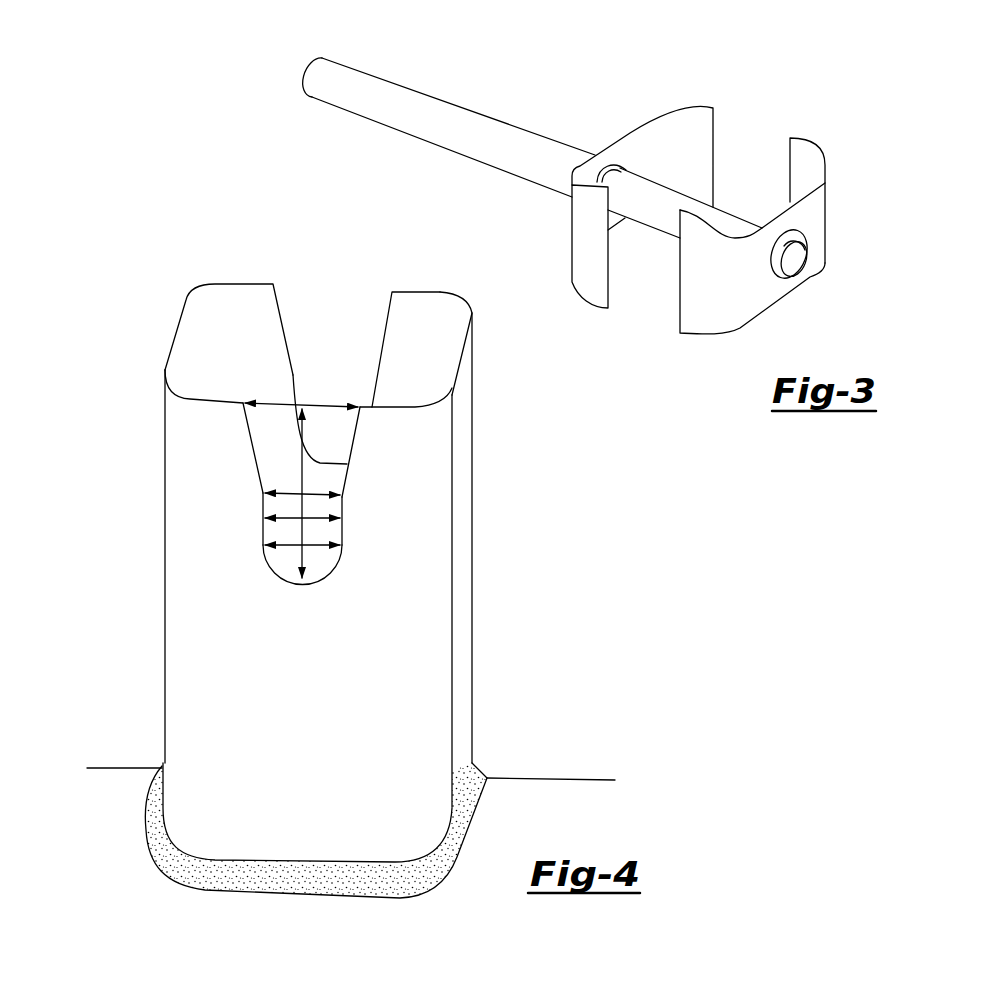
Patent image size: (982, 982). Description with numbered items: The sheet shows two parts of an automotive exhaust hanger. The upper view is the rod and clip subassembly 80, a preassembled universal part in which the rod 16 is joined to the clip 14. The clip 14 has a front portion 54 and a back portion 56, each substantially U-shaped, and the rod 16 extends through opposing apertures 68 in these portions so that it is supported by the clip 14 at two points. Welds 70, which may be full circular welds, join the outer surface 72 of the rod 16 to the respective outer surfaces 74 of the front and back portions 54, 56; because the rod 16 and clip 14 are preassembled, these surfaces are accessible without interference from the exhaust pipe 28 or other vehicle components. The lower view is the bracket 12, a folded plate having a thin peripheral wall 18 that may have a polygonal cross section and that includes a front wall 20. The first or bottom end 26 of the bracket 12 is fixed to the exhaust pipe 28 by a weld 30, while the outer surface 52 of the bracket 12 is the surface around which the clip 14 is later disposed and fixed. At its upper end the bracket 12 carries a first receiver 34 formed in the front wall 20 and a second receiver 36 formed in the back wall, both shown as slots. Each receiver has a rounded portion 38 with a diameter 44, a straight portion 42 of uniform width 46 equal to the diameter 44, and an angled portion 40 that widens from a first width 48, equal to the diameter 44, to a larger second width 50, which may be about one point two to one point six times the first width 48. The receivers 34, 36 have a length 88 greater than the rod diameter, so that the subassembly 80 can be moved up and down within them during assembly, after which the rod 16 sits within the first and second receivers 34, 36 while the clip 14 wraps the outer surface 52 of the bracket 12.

In FIG. 3, the rod and clip subassembly 80 is at (573, 88).
In FIG. 3, the outer surface of the rod 72 is at (420, 103).
In FIG. 3, the rod 16 is at (330, 92).
In FIG. 3, the front portion of the clip 54 is at (568, 257).
In FIG. 3, the clip 14 is at (693, 122).
In FIG. 3, the apertures 68 is at (615, 165).
In FIG. 3, the welds 70 is at (779, 283).
In FIG. 3, the outer surfaces of the clip portions 74 is at (815, 208).
In FIG. 3, the back portion of the clip 56 is at (708, 310).
In FIG. 4, the exhaust pipe 28 is at (154, 305).
In FIG. 4, the second receiver 36 is at (282, 313).
In FIG. 4, the peripheral wall 18 is at (412, 292).
In FIG. 4, the bracket 12 is at (427, 342).
In FIG. 4, the second width 50 is at (268, 397).
In FIG. 4, the angled portion 40 is at (248, 443).
In FIG. 4, the first receiver 34 is at (349, 440).
In FIG. 4, the length of the receivers 88 is at (300, 468).
In FIG. 4, the first width 48 is at (318, 493).
In FIG. 4, the straight portion 42 is at (255, 515).
In FIG. 4, the uniform width 46 is at (318, 520).
In FIG. 4, the diameter 44 is at (320, 550).
In FIG. 4, the rounded portion 38 is at (260, 567).
In FIG. 4, the outer surface of the bracket 52 is at (460, 556).
In FIG. 4, the front wall 20 is at (410, 667).
In FIG. 4, the first or bottom end 26 is at (123, 807).
In FIG. 4, the weld 30 is at (405, 875).